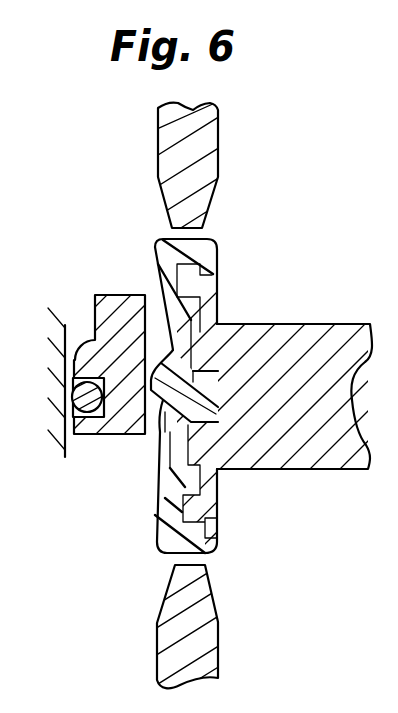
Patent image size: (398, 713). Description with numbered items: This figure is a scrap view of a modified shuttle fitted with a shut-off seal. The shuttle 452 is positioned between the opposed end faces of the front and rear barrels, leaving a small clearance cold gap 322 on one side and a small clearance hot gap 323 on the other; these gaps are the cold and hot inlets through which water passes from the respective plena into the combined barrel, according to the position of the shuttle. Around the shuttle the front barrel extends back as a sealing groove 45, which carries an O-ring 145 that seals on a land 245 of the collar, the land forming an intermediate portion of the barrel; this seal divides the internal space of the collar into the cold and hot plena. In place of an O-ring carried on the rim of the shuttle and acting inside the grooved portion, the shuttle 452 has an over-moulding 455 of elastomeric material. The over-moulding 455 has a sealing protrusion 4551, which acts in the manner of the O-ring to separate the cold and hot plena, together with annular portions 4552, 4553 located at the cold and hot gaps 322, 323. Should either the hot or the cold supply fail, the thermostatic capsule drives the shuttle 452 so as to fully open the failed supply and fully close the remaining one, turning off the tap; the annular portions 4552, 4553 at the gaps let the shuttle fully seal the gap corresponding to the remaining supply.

The cold gap 322 is at (170, 232).
The hot gap 323 is at (171, 563).
The shuttle 452 is at (293, 343).
The over-moulding 455 is at (160, 316).
The sealing protrusion 4551 is at (160, 432).
The annular portion 4552 is at (207, 248).
The annular portion 4553 is at (208, 547).
The sealing groove 45 is at (123, 434).
The O-ring 145 is at (84, 425).
The land 245 is at (60, 358).